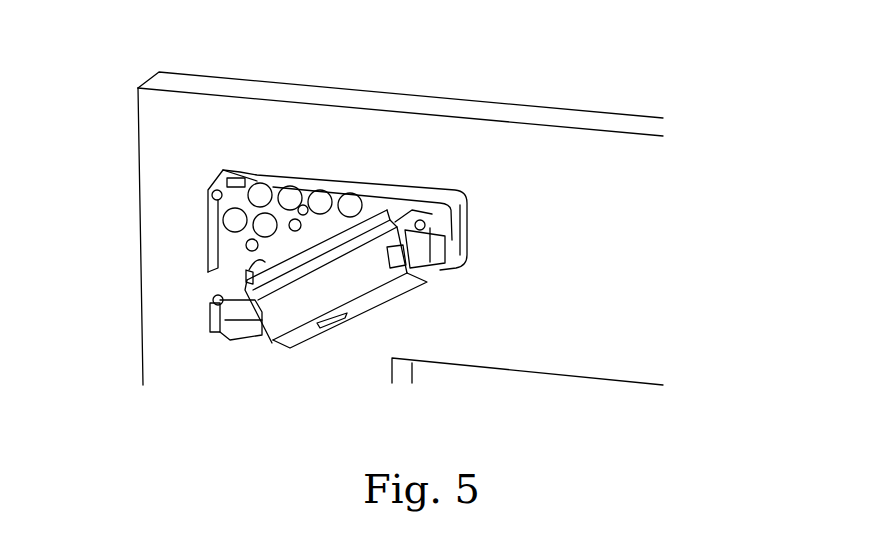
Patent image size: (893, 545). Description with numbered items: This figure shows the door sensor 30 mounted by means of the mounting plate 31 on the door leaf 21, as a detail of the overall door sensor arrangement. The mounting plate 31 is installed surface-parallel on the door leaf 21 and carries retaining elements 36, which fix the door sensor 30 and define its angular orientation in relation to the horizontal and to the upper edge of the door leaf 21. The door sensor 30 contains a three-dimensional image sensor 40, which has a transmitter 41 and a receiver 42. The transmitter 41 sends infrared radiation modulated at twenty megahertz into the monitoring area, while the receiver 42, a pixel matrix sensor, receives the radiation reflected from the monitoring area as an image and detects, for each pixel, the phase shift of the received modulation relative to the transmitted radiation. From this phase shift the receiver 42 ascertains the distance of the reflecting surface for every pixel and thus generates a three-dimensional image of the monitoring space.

The door sensor 30 is at (413, 83).
The door leaf 21 is at (602, 260).
The mounting plate 31 is at (280, 238).
The retaining elements 36 is at (420, 252).
The 3D image sensor 40 is at (410, 293).
The transmitter 41 is at (360, 328).
The receiver 42 is at (313, 330).